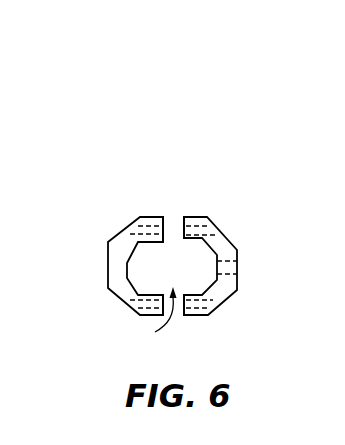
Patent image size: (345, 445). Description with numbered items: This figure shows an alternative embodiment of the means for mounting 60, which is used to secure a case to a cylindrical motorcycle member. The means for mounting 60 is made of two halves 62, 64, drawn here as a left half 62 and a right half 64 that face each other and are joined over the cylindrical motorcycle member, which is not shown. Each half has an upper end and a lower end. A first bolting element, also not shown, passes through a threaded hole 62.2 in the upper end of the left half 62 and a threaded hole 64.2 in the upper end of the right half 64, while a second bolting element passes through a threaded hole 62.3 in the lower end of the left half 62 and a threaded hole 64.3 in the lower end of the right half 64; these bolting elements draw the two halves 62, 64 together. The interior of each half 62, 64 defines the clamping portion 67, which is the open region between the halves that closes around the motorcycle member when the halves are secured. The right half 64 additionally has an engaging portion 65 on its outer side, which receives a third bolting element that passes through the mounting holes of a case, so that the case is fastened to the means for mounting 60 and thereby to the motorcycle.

The means for mounting 60 is at (118, 182).
The half 62 is at (108, 268).
The threaded hole 62.2 is at (127, 233).
The threaded hole 62.3 is at (125, 303).
The right half 64 is at (237, 254).
The threaded hole 64.2 is at (231, 234).
The threaded hole 64.3 is at (222, 305).
The engaging portion 65 is at (237, 277).
The clamping portion 67 is at (154, 319).